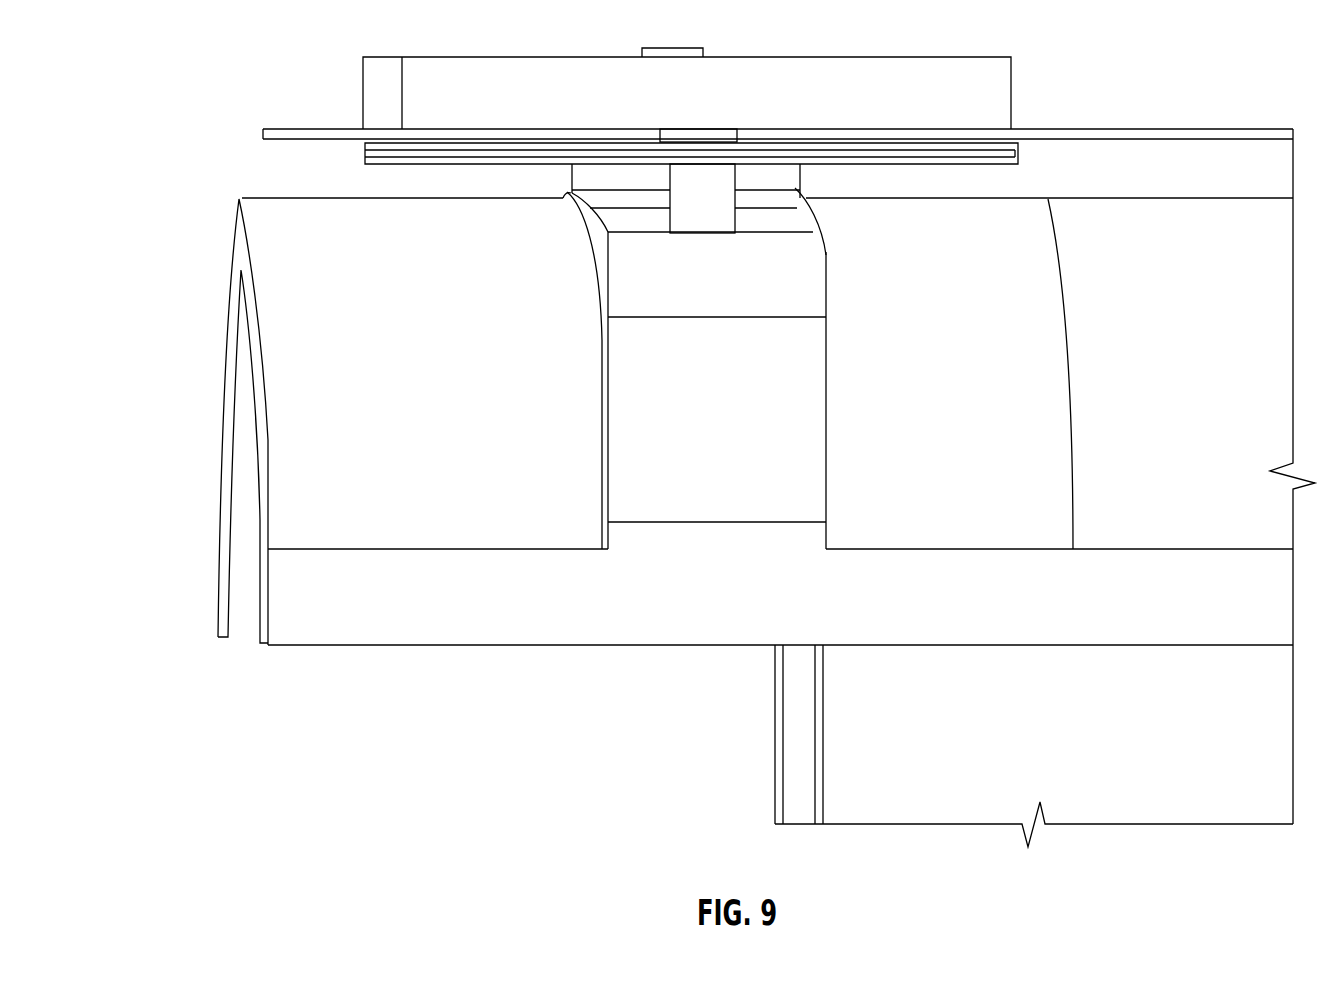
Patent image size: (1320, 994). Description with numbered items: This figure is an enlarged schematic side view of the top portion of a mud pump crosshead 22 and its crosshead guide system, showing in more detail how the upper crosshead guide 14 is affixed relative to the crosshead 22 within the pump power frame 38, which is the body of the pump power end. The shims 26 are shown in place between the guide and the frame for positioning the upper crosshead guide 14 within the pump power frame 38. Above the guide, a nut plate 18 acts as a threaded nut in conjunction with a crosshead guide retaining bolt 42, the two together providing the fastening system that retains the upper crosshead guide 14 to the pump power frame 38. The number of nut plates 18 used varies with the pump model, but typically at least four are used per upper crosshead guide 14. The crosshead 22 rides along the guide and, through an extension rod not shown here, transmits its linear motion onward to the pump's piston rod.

The upper crosshead guide 14 is at (233, 218).
The nut plate 18 is at (363, 57).
The crosshead 22 is at (775, 720).
The shims 26 is at (362, 149).
The pump power frame 38 is at (1185, 128).
The crosshead guide retaining bolt 42 is at (742, 178).